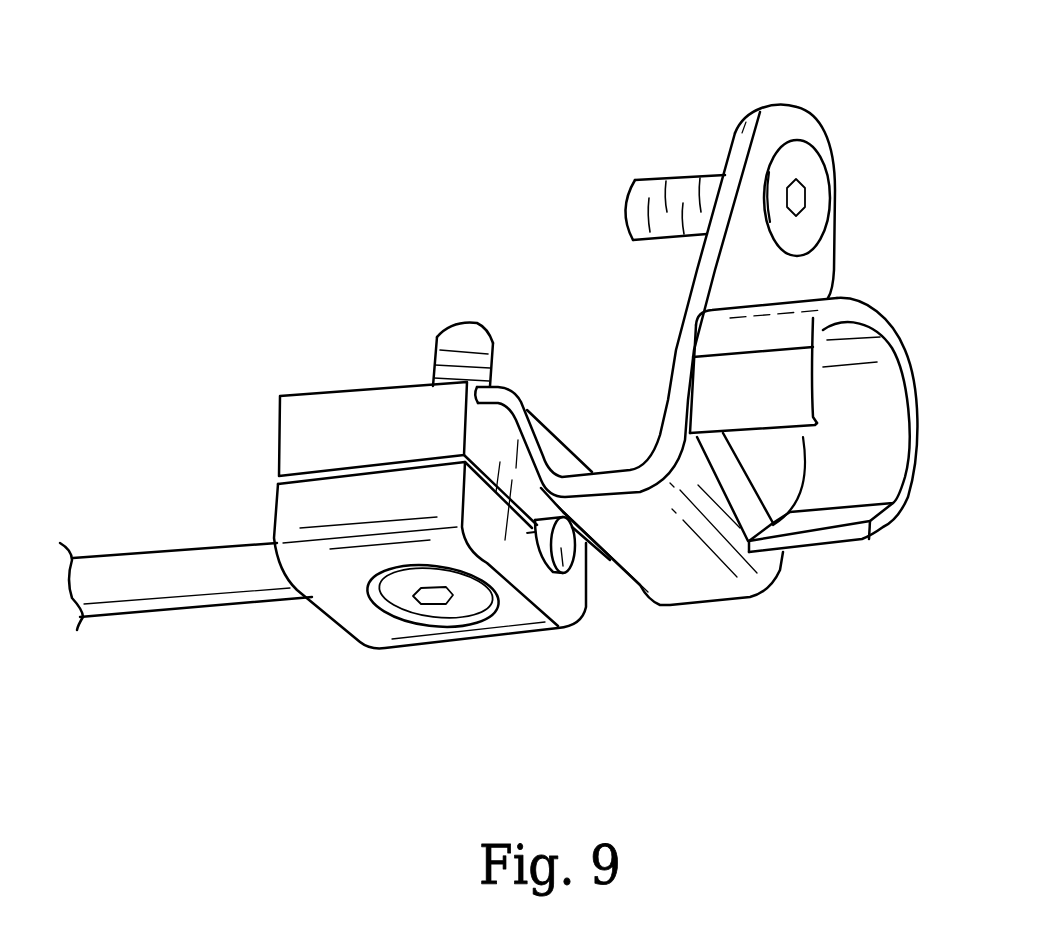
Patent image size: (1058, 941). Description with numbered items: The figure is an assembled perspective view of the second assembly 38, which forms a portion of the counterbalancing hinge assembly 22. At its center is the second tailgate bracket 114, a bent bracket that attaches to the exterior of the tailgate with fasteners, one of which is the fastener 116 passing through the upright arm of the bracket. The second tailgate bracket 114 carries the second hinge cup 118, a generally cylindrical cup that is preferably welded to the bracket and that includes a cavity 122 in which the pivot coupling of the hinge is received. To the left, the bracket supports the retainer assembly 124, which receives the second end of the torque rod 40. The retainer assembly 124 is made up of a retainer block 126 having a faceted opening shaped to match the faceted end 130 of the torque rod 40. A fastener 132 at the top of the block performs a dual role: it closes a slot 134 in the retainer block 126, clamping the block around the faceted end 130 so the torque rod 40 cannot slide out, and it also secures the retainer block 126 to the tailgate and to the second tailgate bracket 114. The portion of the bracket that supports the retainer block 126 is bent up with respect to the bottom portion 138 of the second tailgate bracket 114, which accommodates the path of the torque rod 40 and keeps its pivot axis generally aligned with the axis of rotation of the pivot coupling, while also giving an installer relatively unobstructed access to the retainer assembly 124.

The counterbalancing hinge assembly 22 is at (340, 218).
The second assembly 38 is at (646, 697).
The torque rod 40 is at (132, 590).
The second tailgate bracket 114 is at (790, 112).
The fastener 116 is at (662, 181).
The second hinge cup 118 is at (827, 302).
The cavity 122 is at (887, 460).
The retainer assembly 124 is at (297, 688).
The retainer block 126 is at (333, 405).
The faceted end 130 is at (553, 572).
The fastener 132 is at (467, 332).
The slot 134 is at (278, 484).
The bottom portion 138 is at (713, 572).